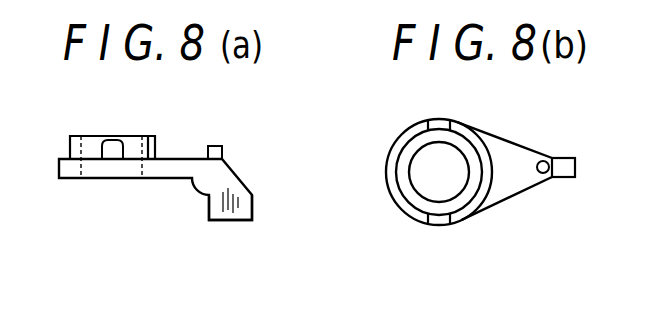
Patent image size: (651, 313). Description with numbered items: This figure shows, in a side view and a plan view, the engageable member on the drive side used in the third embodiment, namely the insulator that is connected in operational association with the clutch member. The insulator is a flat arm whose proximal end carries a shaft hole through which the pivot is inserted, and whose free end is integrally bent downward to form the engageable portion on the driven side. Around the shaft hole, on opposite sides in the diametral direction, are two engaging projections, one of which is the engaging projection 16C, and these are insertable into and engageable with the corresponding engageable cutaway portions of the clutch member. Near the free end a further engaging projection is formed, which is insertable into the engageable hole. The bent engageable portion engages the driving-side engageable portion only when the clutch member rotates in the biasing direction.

The engaging projection 16C is at (438, 119).